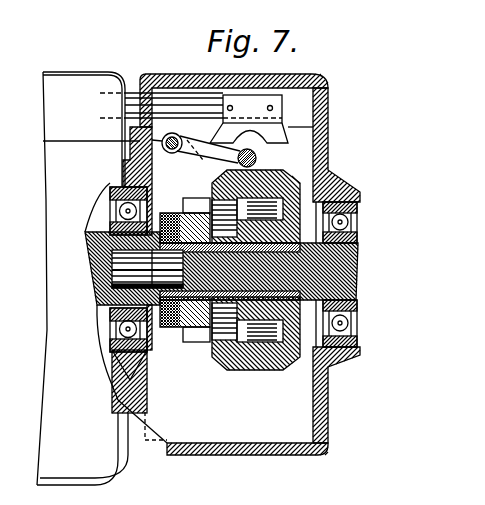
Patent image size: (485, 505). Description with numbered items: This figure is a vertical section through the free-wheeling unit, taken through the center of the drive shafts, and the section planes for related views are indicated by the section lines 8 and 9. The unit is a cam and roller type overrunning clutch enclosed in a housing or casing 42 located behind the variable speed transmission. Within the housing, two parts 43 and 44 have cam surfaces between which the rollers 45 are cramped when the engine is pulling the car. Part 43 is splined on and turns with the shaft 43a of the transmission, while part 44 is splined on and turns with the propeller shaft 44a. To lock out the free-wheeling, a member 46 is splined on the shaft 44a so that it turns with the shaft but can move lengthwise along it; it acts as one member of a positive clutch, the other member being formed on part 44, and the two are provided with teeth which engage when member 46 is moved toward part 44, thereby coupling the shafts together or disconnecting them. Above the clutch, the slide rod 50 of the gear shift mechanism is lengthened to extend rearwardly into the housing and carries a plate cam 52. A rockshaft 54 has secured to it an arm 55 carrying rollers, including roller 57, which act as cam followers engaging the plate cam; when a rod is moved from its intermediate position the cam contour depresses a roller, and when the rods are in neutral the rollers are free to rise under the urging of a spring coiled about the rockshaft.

The section line 8- 8 is at (172, 100).
The section line 9- 9 is at (112, 163).
The housing or casing 42 is at (328, 138).
The part 43 is at (241, 373).
The shaft of the transmission 43a is at (98, 290).
The part 44 is at (262, 373).
The propeller shaft 44a is at (90, 243).
The rollers 45 is at (313, 170).
The member 46 is at (195, 347).
The slide rod 50 is at (167, 103).
The plate cam 52 is at (249, 119).
The rockshaft 54 is at (171, 154).
The arm 55 is at (207, 158).
The roller 57 is at (257, 158).